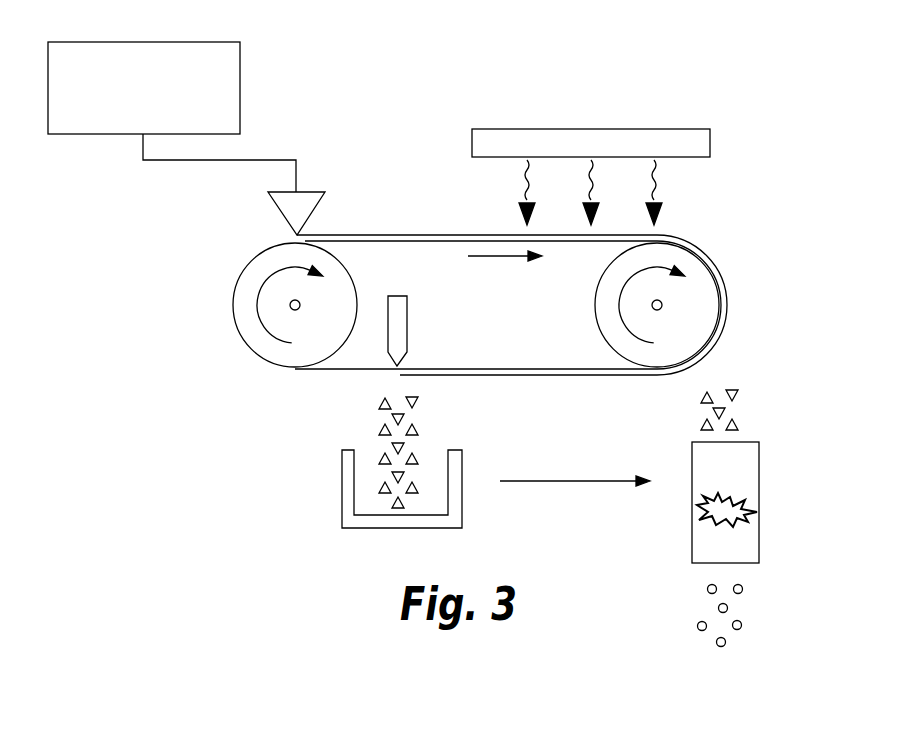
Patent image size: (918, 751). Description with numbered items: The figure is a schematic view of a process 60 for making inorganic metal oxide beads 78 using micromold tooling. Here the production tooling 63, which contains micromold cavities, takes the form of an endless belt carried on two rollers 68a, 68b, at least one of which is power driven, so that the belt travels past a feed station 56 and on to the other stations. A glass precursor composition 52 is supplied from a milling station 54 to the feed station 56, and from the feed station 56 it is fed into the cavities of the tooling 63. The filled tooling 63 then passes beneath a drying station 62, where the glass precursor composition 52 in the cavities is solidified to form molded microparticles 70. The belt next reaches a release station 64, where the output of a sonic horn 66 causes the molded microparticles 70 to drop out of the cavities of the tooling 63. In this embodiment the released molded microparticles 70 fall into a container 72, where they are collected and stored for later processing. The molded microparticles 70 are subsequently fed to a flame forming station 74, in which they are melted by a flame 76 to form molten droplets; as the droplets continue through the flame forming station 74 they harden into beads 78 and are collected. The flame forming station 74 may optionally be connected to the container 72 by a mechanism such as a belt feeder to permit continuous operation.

The glass precursor composition 52 is at (397, 237).
The milling station 54 is at (230, 78).
The feed station 56 is at (308, 202).
The process 60 is at (641, 84).
The drying station 62 is at (683, 137).
The production tooling 63 is at (277, 240).
The release station 64 is at (423, 357).
The sonic horn 66 is at (400, 296).
The roller 68a is at (272, 348).
The roller 68b is at (703, 325).
The molded microparticles 70 is at (413, 428).
The container 72 is at (347, 483).
The flame forming station 74 is at (747, 475).
The flame 76 is at (745, 510).
The beads 78 is at (743, 589).